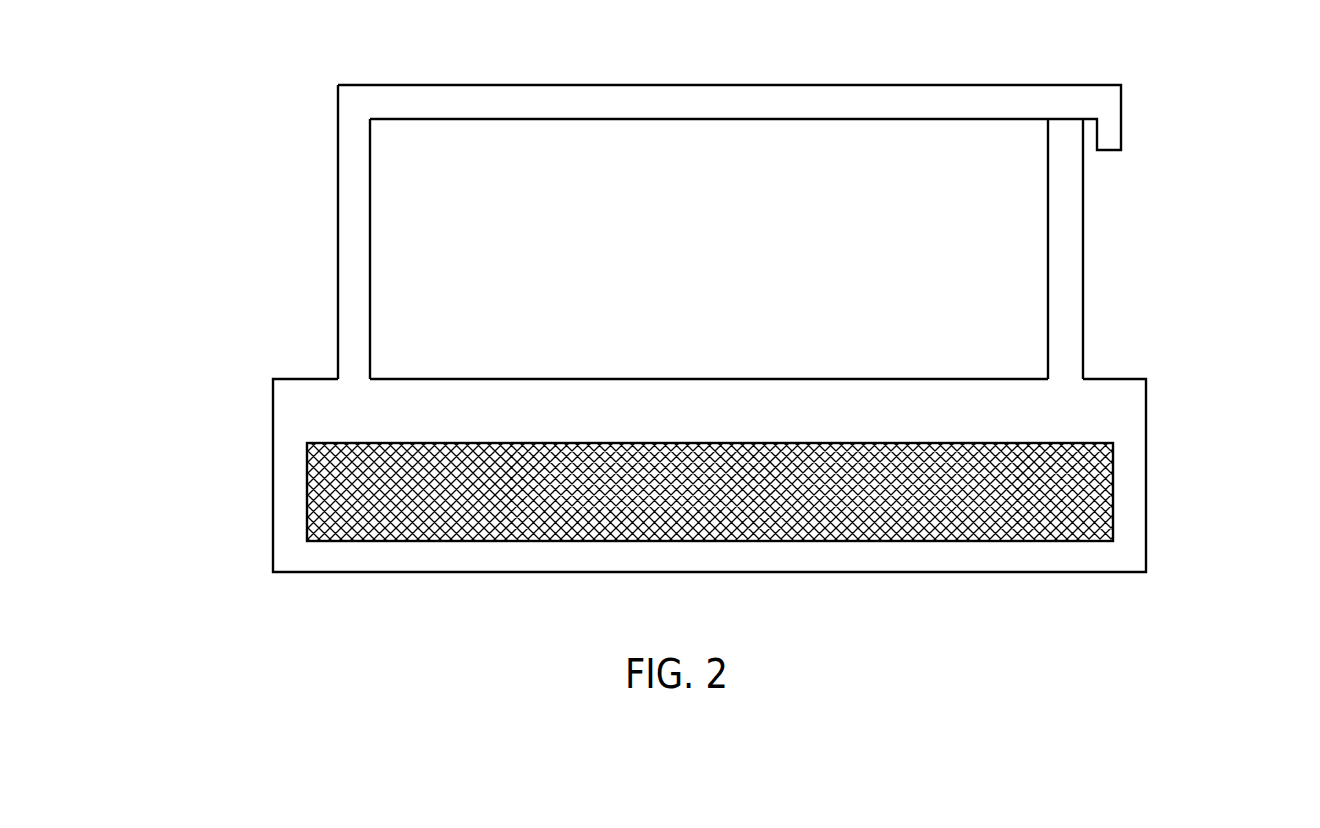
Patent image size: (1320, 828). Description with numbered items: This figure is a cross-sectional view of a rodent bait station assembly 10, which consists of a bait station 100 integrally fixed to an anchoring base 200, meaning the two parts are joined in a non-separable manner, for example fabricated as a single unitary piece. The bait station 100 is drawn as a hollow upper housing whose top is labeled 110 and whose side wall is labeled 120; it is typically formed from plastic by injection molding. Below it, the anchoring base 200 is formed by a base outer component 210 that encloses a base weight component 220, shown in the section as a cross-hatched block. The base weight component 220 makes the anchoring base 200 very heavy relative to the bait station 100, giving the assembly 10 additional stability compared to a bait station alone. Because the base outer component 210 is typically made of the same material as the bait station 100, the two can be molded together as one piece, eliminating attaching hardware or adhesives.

The rodent bait station assembly 10 is at (1265, 72).
The bait station 100 is at (203, 85).
The top plate 110 is at (931, 85).
The side wall 120 is at (1085, 258).
The anchoring base 200 is at (95, 380).
The base outer component 210 is at (273, 483).
The base weight component 220 is at (307, 520).